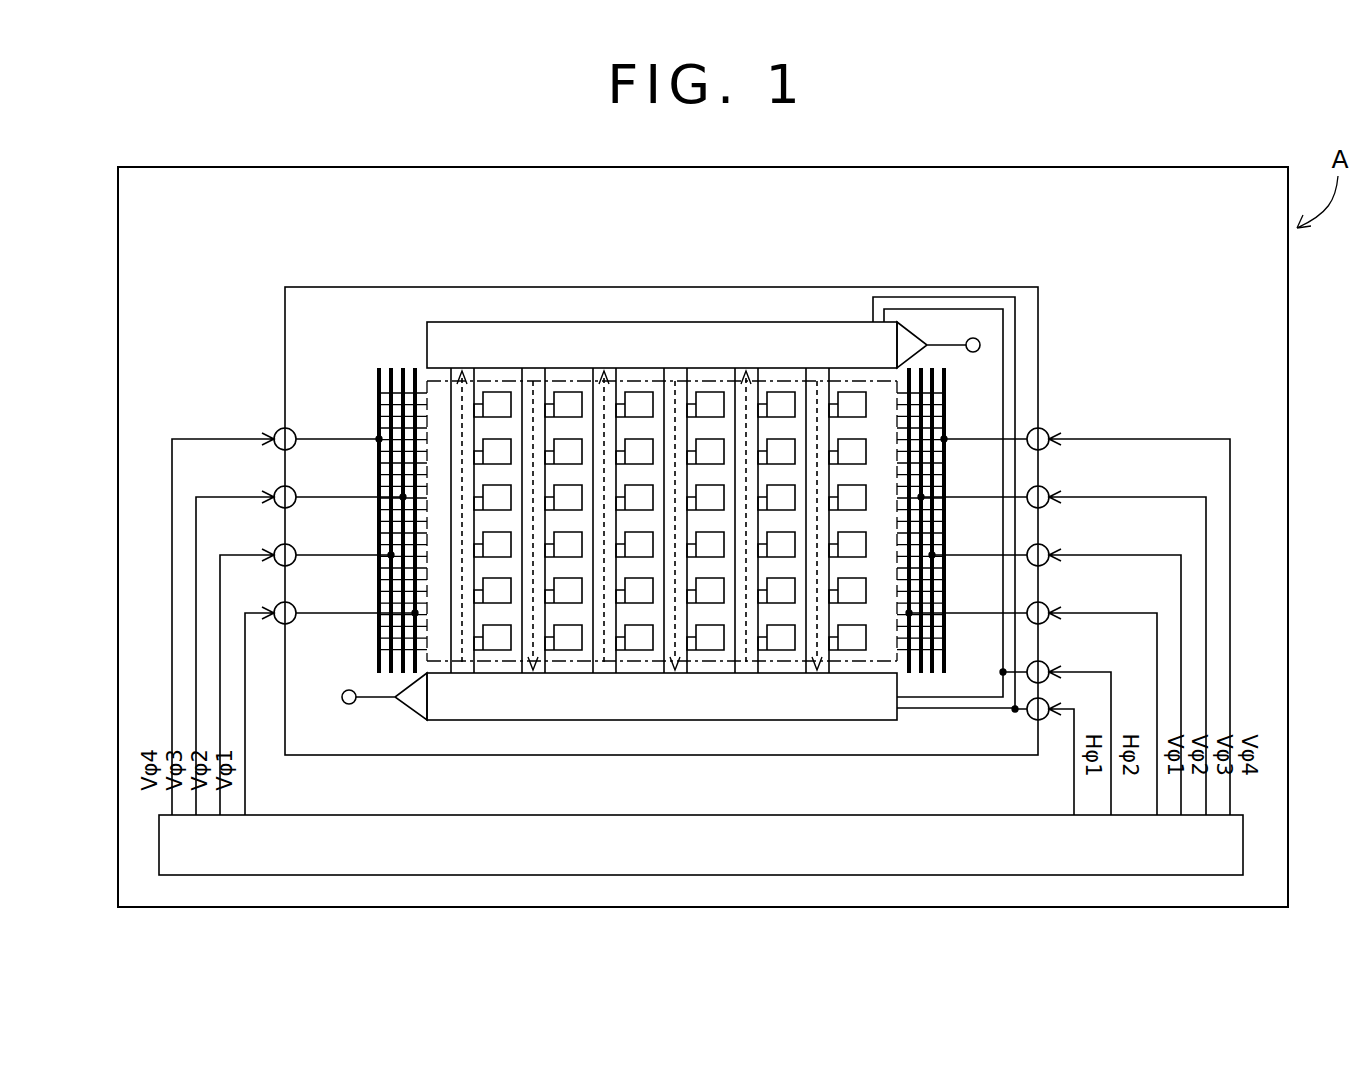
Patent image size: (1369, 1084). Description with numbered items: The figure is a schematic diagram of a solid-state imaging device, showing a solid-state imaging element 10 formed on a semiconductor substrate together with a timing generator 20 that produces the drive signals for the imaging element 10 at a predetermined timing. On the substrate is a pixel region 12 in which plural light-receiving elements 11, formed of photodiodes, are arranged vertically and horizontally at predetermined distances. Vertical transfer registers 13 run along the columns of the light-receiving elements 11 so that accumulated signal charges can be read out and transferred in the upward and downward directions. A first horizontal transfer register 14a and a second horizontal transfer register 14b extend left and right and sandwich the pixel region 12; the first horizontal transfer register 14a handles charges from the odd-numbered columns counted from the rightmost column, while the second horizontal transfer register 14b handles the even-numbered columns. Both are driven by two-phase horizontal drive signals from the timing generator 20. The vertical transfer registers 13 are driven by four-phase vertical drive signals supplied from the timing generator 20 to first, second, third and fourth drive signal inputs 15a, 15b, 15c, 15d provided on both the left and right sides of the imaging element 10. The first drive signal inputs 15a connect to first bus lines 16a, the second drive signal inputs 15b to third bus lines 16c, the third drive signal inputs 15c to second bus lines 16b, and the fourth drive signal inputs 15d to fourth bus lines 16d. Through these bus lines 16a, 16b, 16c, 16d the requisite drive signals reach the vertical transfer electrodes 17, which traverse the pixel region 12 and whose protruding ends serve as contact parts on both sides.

The solid-state imaging element 10 is at (806, 287).
The light-receiving element 11 is at (778, 640).
The pixel region 12 is at (848, 661).
The vertical transfer register 13 is at (680, 642).
The first horizontal transfer register 14a is at (545, 703).
The second horizontal transfer register 14b is at (585, 338).
The first drive signal input 15a is at (275, 606).
The second drive signal input 15b is at (275, 548).
The third drive signal input 15c is at (275, 490).
The fourth drive signal input 15d is at (275, 432).
The first bus line 16a is at (416, 368).
The second bus line 16b is at (403, 368).
The third bus line 16c is at (391, 368).
The fourth bus line 16d is at (380, 368).
The vertical transfer electrode 17 is at (420, 648).
The timing generator 20 is at (159, 848).